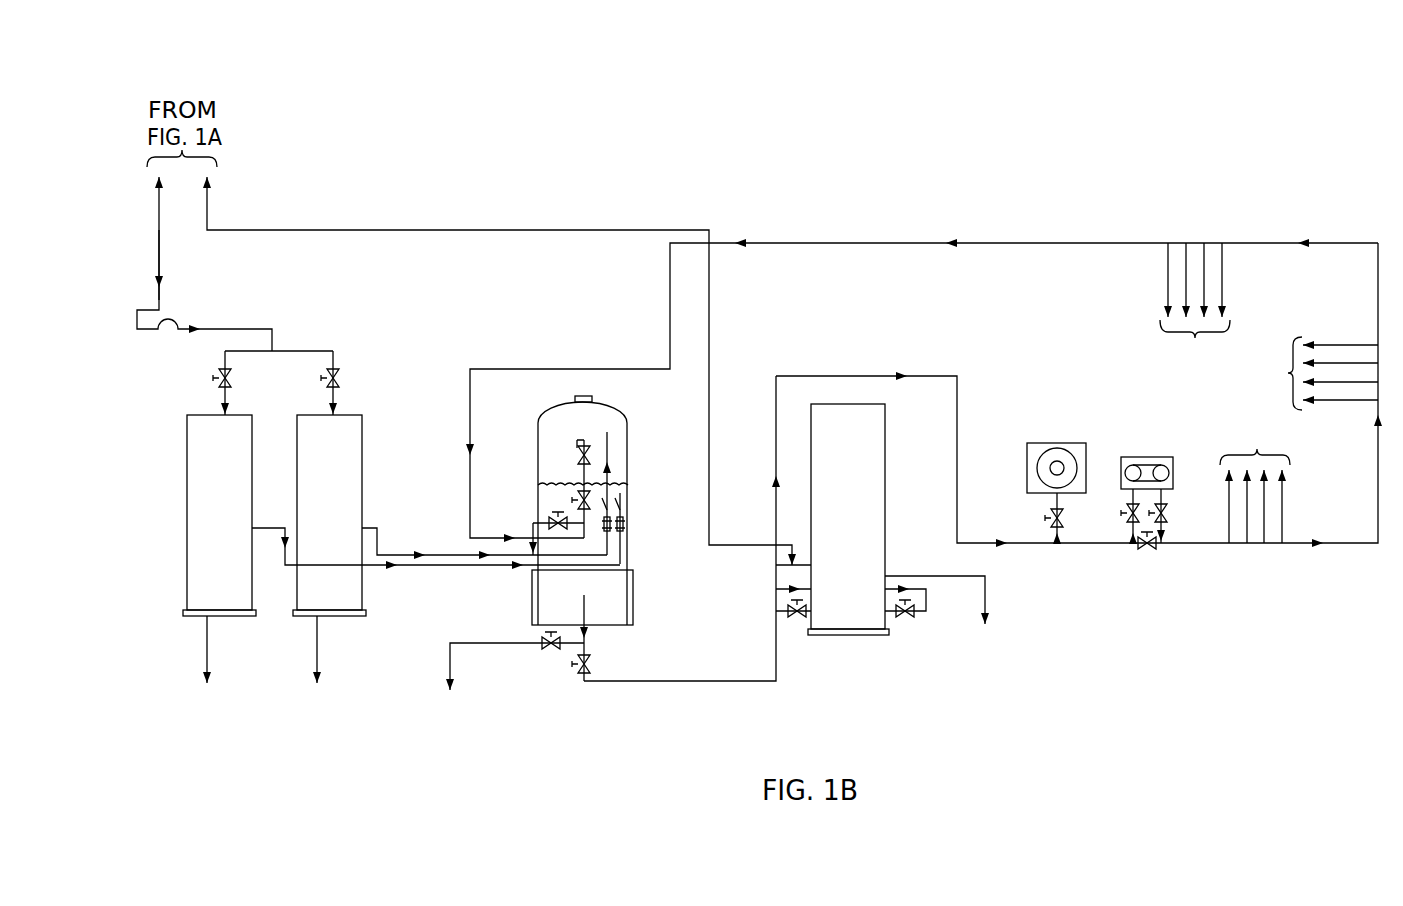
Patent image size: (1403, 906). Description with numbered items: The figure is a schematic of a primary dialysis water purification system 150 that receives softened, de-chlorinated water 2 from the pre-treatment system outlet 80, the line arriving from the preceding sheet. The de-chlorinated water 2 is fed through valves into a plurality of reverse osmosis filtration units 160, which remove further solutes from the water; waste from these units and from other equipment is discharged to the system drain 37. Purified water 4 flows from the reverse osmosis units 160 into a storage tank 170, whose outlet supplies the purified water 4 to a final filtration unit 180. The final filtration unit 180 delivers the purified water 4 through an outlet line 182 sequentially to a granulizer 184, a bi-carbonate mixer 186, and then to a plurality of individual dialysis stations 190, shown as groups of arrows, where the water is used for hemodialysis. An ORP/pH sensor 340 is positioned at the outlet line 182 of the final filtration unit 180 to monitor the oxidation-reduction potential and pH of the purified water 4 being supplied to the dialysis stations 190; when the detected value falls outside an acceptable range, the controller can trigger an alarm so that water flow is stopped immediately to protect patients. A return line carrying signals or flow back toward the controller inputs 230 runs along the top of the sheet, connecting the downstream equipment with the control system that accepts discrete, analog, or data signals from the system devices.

The primary dialysis water purification system 150 is at (815, 142).
The pre-treatment system outlet 80 is at (159, 215).
The de-chlorinated water 2 is at (159, 244).
The inputs 230 is at (252, 230).
The reverse osmosis filtration units 160 is at (242, 415).
The system drain 37 is at (207, 661).
The purified water 4 is at (401, 562).
The storage tank 170 is at (538, 449).
The second ORP/pH sensor 340 is at (781, 557).
The outlet line 182 is at (810, 560).
The final filtration unit 180 is at (885, 500).
The granulizer 184 is at (1052, 443).
The bi-carbonate mixer 186 is at (1140, 457).
The dialysis stations 190 is at (1269, 393).